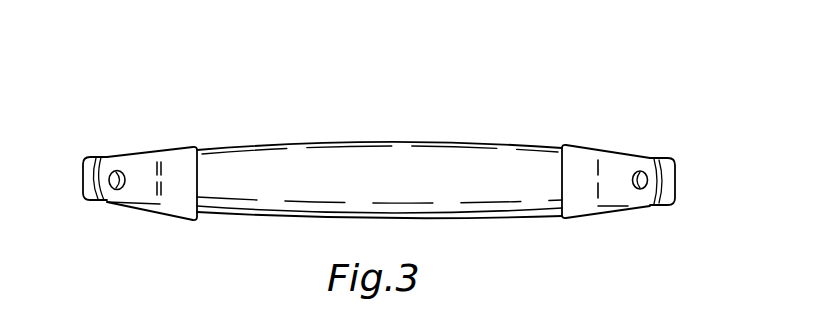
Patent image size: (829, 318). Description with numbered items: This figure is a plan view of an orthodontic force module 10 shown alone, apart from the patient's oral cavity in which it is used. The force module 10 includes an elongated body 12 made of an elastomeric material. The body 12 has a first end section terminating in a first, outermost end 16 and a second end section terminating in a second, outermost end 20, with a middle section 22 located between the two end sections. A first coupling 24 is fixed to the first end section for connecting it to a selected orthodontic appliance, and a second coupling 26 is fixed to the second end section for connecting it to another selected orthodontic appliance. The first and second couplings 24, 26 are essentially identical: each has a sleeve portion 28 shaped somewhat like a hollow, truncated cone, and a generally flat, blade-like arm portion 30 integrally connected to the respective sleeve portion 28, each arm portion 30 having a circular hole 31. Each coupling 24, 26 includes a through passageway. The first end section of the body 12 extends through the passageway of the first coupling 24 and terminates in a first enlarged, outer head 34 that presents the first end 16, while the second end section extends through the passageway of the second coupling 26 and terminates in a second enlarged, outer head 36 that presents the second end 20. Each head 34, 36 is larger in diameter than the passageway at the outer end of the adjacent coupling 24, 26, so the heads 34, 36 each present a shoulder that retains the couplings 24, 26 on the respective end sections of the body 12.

The orthodontic force module 10 is at (455, 86).
The elongated body 12 is at (288, 145).
The first outermost end 16 is at (82, 187).
The second outermost end 20 is at (675, 187).
The middle section 22 is at (290, 207).
The first coupling 24 is at (178, 150).
The second coupling 26 is at (576, 155).
The sleeve portion 28 is at (178, 208).
The arm portion 30 is at (135, 162).
The circular hole 31 is at (108, 189).
The first enlarged outer head 34 is at (86, 170).
The second enlarged outer head 36 is at (668, 169).